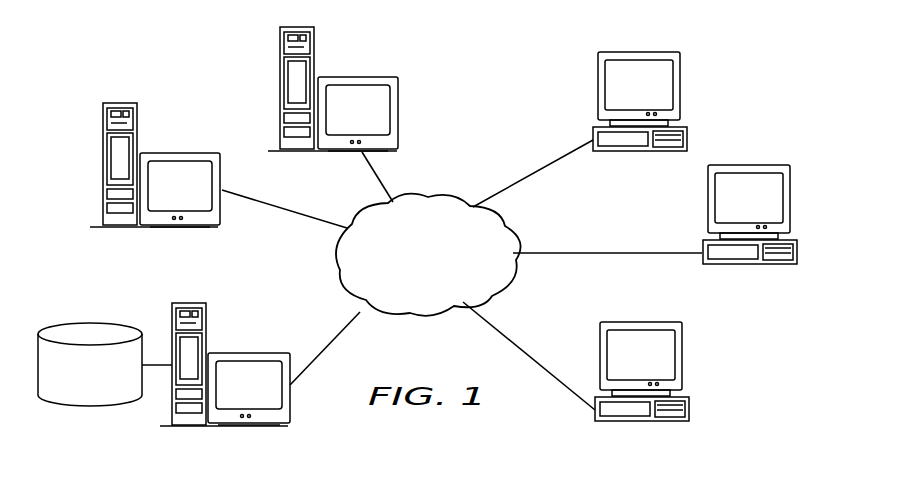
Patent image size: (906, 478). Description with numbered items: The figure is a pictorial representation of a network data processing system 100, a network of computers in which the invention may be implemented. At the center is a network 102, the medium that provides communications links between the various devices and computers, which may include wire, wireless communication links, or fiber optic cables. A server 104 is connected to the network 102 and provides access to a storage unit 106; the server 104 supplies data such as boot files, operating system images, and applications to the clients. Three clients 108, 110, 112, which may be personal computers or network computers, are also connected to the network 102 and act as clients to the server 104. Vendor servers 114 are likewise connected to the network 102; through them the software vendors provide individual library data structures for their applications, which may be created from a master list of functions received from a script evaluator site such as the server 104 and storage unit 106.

The network data processing system 100 is at (752, 116).
The network 102 is at (444, 277).
The server 104 is at (243, 350).
The storage unit 106 is at (88, 322).
The client 108 is at (682, 93).
The client 110 is at (790, 203).
The client 112 is at (683, 362).
The vendor servers 114 is at (180, 152).